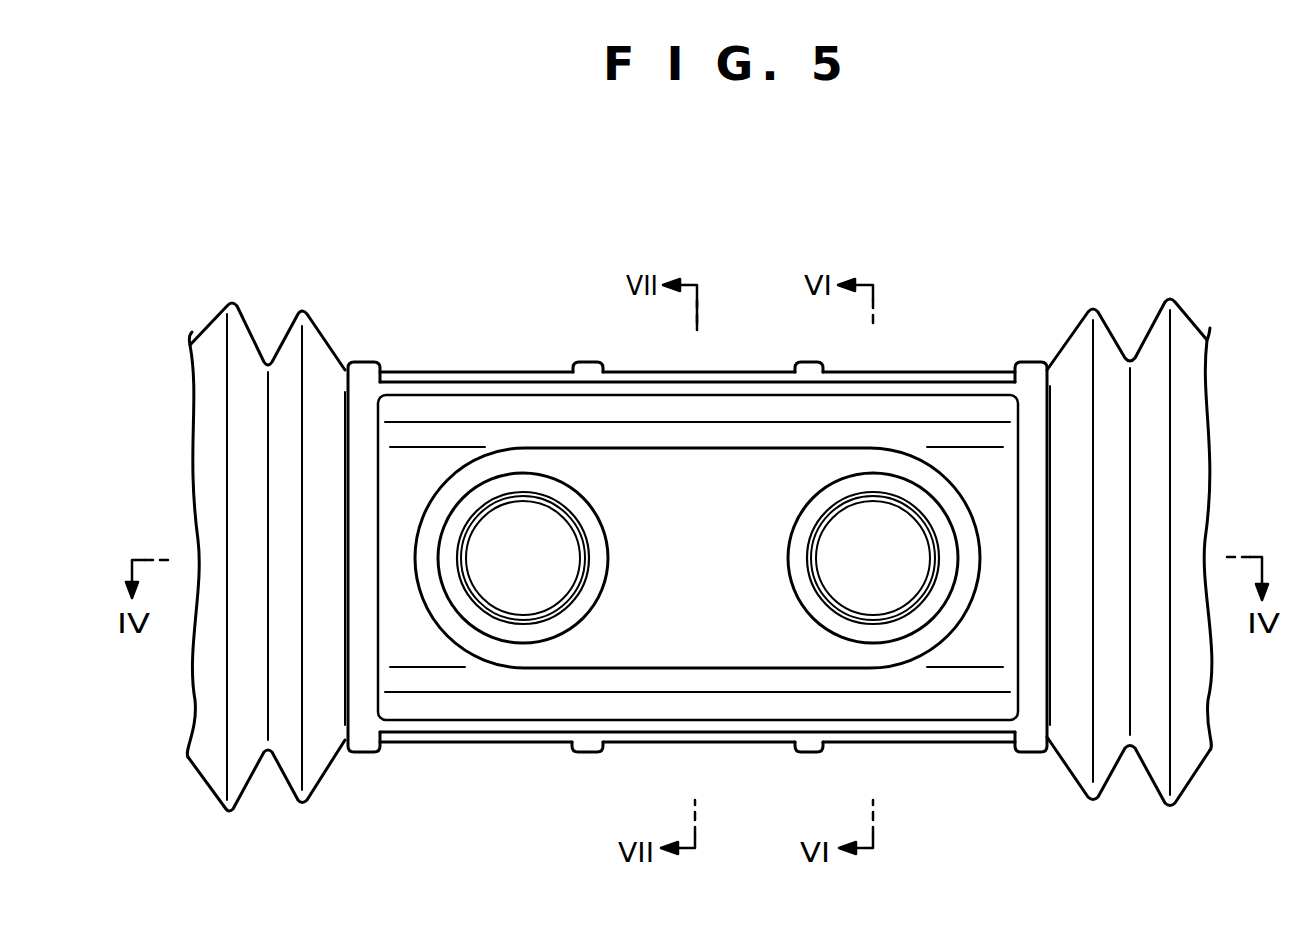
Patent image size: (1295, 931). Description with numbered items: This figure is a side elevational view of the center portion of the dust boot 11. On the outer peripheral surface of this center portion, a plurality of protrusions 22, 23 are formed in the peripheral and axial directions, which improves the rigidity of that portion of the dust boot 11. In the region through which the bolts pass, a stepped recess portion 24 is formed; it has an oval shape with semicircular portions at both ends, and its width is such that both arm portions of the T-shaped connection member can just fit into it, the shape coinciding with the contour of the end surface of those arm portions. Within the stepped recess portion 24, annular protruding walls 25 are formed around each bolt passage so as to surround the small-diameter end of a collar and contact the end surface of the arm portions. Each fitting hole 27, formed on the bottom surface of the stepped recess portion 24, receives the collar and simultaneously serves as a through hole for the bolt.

The dust boot 11 is at (1000, 258).
The protrusion 22 is at (587, 362).
The protrusion 23 is at (483, 372).
The stepped recess portion 24 is at (760, 668).
The annular protruding wall 25 is at (805, 525).
The fitting hole 27 is at (538, 500).